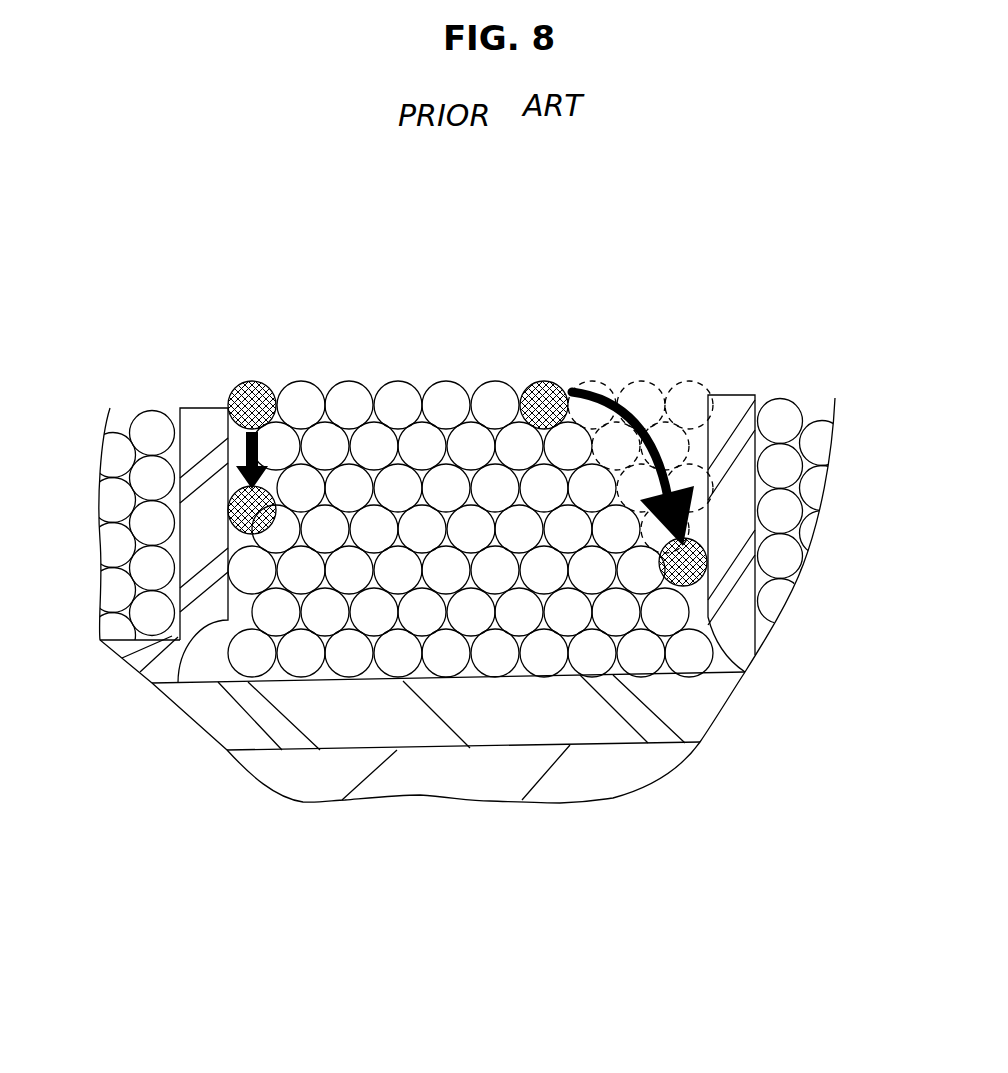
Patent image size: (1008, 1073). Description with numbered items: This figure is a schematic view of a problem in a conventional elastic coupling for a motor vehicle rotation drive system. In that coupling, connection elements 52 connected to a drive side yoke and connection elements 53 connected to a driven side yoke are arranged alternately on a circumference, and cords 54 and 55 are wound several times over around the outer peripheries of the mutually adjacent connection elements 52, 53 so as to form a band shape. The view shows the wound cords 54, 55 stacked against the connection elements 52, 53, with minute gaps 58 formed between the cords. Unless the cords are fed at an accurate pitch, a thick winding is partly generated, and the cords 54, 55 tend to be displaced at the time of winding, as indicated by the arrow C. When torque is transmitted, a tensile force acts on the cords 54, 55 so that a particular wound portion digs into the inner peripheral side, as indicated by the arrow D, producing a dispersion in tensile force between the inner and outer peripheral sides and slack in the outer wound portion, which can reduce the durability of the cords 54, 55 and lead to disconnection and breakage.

The connection element 52 is at (467, 651).
The connection element 53 is at (453, 780).
The cord 54 is at (453, 372).
The cord 55 is at (146, 392).
The minute gap 58 is at (105, 428).
The arrow indicating displacement of the cords C is at (650, 398).
The arrow indicating digging in of a wound portion D is at (230, 440).